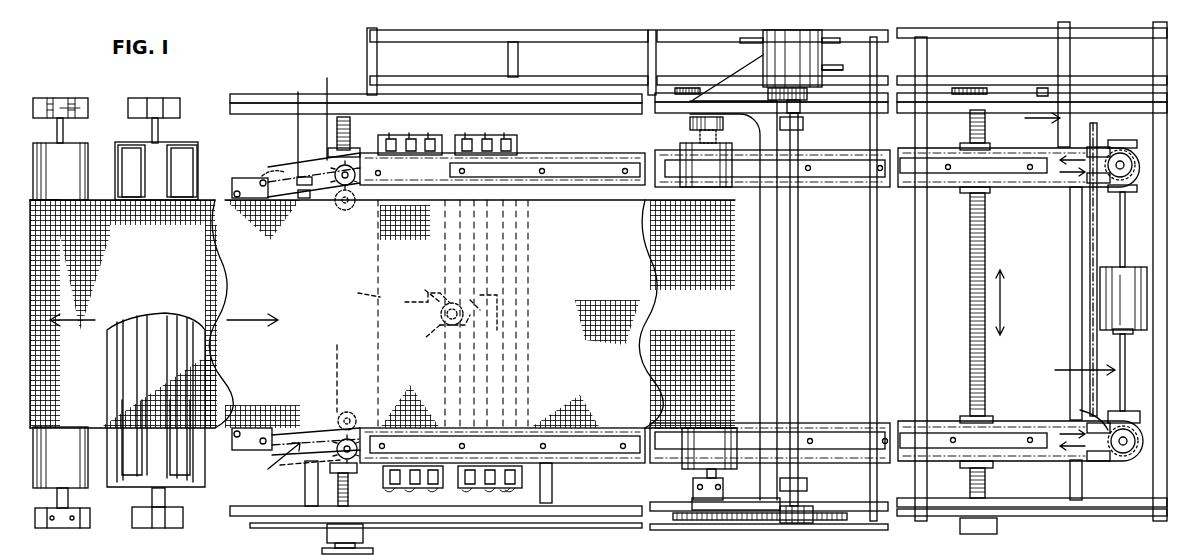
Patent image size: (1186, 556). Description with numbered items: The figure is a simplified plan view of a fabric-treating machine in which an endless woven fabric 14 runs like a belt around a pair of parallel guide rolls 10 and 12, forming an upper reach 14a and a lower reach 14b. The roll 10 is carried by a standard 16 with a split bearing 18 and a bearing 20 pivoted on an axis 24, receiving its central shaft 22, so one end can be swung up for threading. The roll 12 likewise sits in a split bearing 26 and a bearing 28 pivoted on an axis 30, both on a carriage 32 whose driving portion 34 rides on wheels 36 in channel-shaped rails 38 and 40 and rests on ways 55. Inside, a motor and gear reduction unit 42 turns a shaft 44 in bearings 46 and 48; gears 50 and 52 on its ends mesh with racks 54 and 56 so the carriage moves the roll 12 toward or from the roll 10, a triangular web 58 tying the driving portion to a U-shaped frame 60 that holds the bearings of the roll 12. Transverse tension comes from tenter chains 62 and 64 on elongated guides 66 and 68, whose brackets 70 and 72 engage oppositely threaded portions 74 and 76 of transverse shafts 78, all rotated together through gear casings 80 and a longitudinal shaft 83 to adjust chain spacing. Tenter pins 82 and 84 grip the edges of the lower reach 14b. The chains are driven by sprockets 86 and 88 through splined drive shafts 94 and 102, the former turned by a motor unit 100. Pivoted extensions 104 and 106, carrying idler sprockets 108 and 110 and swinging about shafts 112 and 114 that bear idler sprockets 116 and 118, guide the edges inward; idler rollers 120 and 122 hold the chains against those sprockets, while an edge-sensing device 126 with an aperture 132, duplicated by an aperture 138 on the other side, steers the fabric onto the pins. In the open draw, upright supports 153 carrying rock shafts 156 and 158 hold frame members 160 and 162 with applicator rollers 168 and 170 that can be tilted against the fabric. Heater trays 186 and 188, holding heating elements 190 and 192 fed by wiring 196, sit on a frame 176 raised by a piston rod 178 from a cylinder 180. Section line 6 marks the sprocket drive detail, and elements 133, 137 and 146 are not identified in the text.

The section line 6 is at (1061, 242).
The guide roll 10 is at (43, 445).
The guide roll 12 is at (714, 436).
The endless woven fabric 14 is at (34, 321).
The upper reach 14a is at (62, 216).
The lower reach 14b is at (660, 266).
The standard 16 is at (83, 522).
The split bearing 18 is at (53, 523).
The bearing 20 is at (68, 98).
The central shaft 22 is at (57, 128).
The pivot axis 24 is at (90, 100).
The split bearing 26 is at (693, 485).
The bearing 28 is at (690, 128).
The pivot axis 30 is at (690, 122).
The carriage 32 is at (777, 271).
The driving portion 34 is at (833, 57).
The wheels or rollers 36 is at (750, 35).
The channel-shaped rail 38 is at (945, 76).
The channel-shaped rail 40 is at (945, 30).
The electric motor and gear reduction unit 42 is at (788, 42).
The shaft 44 is at (800, 303).
The bearing 46 is at (804, 131).
The bearing 48 is at (808, 485).
The gear 50 is at (804, 104).
The gear 52 is at (800, 523).
The rack 54 is at (708, 520).
The ways 55 is at (580, 94).
The rack 56 is at (683, 88).
The triangular web 58 is at (735, 75).
The U-shaped frame 60 is at (773, 240).
The tenter chain 62 is at (356, 151).
The tenter chain 64 is at (366, 479).
The elongated guide 66 is at (566, 169).
The elongated guide 68 is at (576, 447).
The bracket 70 is at (962, 194).
The bracket 72 is at (968, 416).
The threaded portion 74 is at (986, 232).
The threaded portion 76 is at (970, 352).
The rotatable shaft 78 is at (970, 299).
The gear casing 80 is at (314, 535).
The tenter pins 82 is at (367, 186).
The longitudinally extending shaft 83 is at (398, 528).
The tenter pins 84 is at (352, 415).
The sprocket 86 is at (1132, 140).
The sprocket 88 is at (1080, 412).
The drive shaft 94 is at (1120, 230).
The motor and gear reduction unit 100 is at (1111, 301).
The drive shaft 102 is at (1120, 355).
The pivoted extension 104 is at (286, 168).
The pivoted extension 106 is at (275, 458).
The idler sprocket 108 is at (266, 186).
The idler sprocket 110 is at (280, 435).
The shaft 112 is at (340, 186).
The shaft 114 is at (338, 437).
The idler sprocket 116 is at (328, 104).
The idler sprocket 118 is at (305, 463).
The idler roller 120 is at (343, 212).
The idler roller 122 is at (330, 367).
The edge-sensing device 126 is at (262, 175).
The aperture 132 is at (237, 180).
The clamp 133 is at (304, 200).
The rod 137 is at (292, 126).
The aperture 138 is at (240, 428).
The rail channel 146 is at (590, 186).
The upright support 153 is at (170, 108).
The rock shaft 156 is at (152, 128).
The rock shaft 158 is at (150, 497).
The frame member 160 is at (154, 144).
The frame member 162 is at (168, 522).
The applicator roller 168 is at (130, 349).
The applicator roller 170 is at (183, 368).
The frame 176 is at (405, 317).
The piston rod 178 is at (415, 341).
The cylinder 180 is at (417, 287).
The reflector tray 186 is at (350, 286).
The reflector tray 188 is at (525, 272).
The electrical heating element 190 is at (417, 488).
The electrical heating element 192 is at (488, 488).
The wiring 196 is at (505, 490).